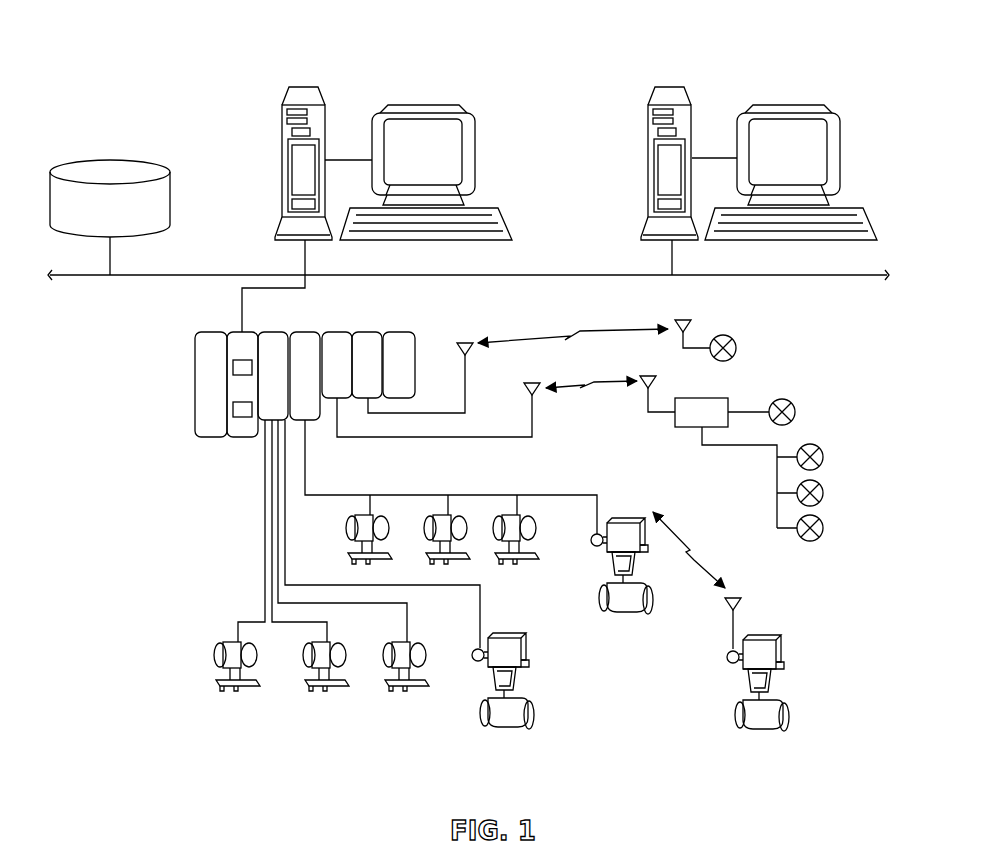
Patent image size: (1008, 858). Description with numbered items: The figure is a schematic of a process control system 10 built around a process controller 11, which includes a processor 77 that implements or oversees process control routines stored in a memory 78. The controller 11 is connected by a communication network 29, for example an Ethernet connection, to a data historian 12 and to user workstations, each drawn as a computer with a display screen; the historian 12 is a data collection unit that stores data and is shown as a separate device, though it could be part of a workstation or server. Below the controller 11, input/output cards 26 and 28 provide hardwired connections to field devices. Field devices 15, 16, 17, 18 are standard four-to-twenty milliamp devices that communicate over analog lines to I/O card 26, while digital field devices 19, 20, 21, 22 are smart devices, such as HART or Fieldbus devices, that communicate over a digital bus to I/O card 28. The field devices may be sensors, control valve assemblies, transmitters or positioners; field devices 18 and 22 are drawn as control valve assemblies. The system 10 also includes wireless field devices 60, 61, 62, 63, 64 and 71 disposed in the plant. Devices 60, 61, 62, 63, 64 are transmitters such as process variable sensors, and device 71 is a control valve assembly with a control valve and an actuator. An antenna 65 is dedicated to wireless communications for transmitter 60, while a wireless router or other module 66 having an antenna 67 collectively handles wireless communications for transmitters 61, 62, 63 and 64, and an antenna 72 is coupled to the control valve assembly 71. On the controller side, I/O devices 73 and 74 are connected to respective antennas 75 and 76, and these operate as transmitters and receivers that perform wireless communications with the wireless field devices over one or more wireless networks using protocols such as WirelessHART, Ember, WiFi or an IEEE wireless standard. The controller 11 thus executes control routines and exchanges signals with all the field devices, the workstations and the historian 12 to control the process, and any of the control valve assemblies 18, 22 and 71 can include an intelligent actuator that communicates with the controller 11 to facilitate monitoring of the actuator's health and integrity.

The process control system 10 is at (600, 54).
The process controller 11 is at (236, 333).
The data historian 12 is at (172, 196).
The field device 15 is at (233, 672).
The field device 16 is at (321, 672).
The field device 17 is at (401, 672).
The field device 18 is at (490, 673).
The digital field device 19 is at (377, 513).
The digital field device 20 is at (455, 513).
The digital field device 21 is at (525, 513).
The digital field device 22 is at (622, 521).
The input/output card 26 is at (273, 343).
The input/output card 28 is at (303, 343).
The communication network 29 is at (172, 284).
The wireless field device 60 is at (737, 346).
The wireless field device 61 is at (797, 409).
The wireless field device 62 is at (824, 457).
The wireless field device 63 is at (824, 493).
The wireless field device 64 is at (824, 528).
The antenna 65 is at (693, 325).
The wireless router 66 is at (690, 428).
The antenna 67 is at (656, 392).
The control valve assembly 71 is at (750, 672).
The antenna 72 is at (742, 601).
The I/O device 73 is at (336, 340).
The I/O device 74 is at (370, 340).
The antenna 75 is at (530, 417).
The antenna 76 is at (475, 371).
The processor 77 is at (232, 368).
The memory 78 is at (232, 410).